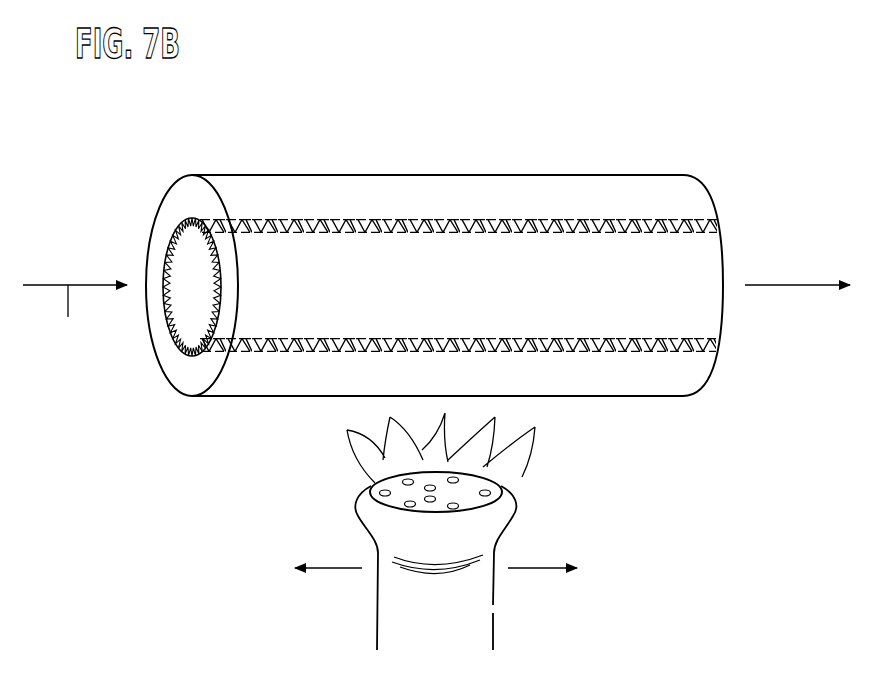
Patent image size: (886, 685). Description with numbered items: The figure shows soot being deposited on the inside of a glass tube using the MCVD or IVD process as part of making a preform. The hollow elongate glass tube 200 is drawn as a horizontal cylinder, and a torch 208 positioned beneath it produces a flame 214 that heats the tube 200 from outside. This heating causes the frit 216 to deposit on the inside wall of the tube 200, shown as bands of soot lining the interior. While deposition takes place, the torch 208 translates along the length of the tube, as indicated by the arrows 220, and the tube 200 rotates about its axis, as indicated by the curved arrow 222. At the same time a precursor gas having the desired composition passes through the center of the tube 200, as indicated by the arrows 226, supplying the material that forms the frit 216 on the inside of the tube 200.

The tube 200 is at (262, 168).
The rotation of the tube 222 is at (667, 257).
The frit 216 is at (717, 350).
The flow of precursor gas 226 is at (75, 317).
The flame 214 is at (508, 465).
The torch 208 is at (495, 573).
The translation of the torch 220 is at (348, 570).